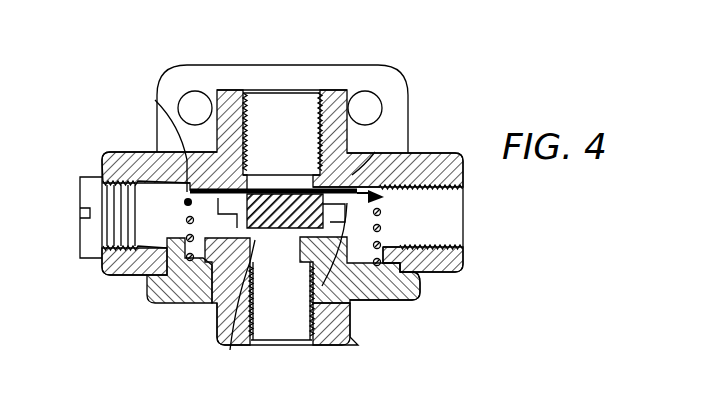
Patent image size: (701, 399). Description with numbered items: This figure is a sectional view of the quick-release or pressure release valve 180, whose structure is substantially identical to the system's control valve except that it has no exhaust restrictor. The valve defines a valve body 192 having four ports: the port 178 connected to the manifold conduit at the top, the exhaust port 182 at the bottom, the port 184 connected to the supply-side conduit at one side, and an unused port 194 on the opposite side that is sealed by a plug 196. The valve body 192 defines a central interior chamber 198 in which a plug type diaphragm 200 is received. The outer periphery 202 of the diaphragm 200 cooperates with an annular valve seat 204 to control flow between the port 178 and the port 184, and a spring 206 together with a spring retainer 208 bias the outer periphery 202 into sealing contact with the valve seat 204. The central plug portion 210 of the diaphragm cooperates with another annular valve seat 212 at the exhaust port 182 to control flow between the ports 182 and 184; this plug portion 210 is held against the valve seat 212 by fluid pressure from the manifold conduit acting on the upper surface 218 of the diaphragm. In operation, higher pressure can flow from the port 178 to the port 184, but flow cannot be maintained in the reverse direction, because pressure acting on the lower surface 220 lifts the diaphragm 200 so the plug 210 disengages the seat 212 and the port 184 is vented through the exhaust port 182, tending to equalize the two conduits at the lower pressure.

The port 178 is at (257, 89).
The quick-release valve 180 is at (165, 57).
The exhaust port 182 is at (292, 323).
The port 184 is at (442, 233).
The valve body 192 is at (398, 298).
The unused port 194 is at (153, 223).
The plug 196 is at (90, 196).
The central interior chamber 198 is at (375, 152).
The plug type diaphragm 200 is at (275, 192).
The outer periphery 202 is at (386, 199).
The annular valve seat 204 is at (155, 100).
The spring 206 is at (202, 302).
The spring retainer 208 is at (284, 232).
The central plug portion 210 is at (293, 232).
The annular valve seat 212 is at (276, 290).
The upper surface 218 is at (230, 153).
The lower surface 220 is at (360, 270).